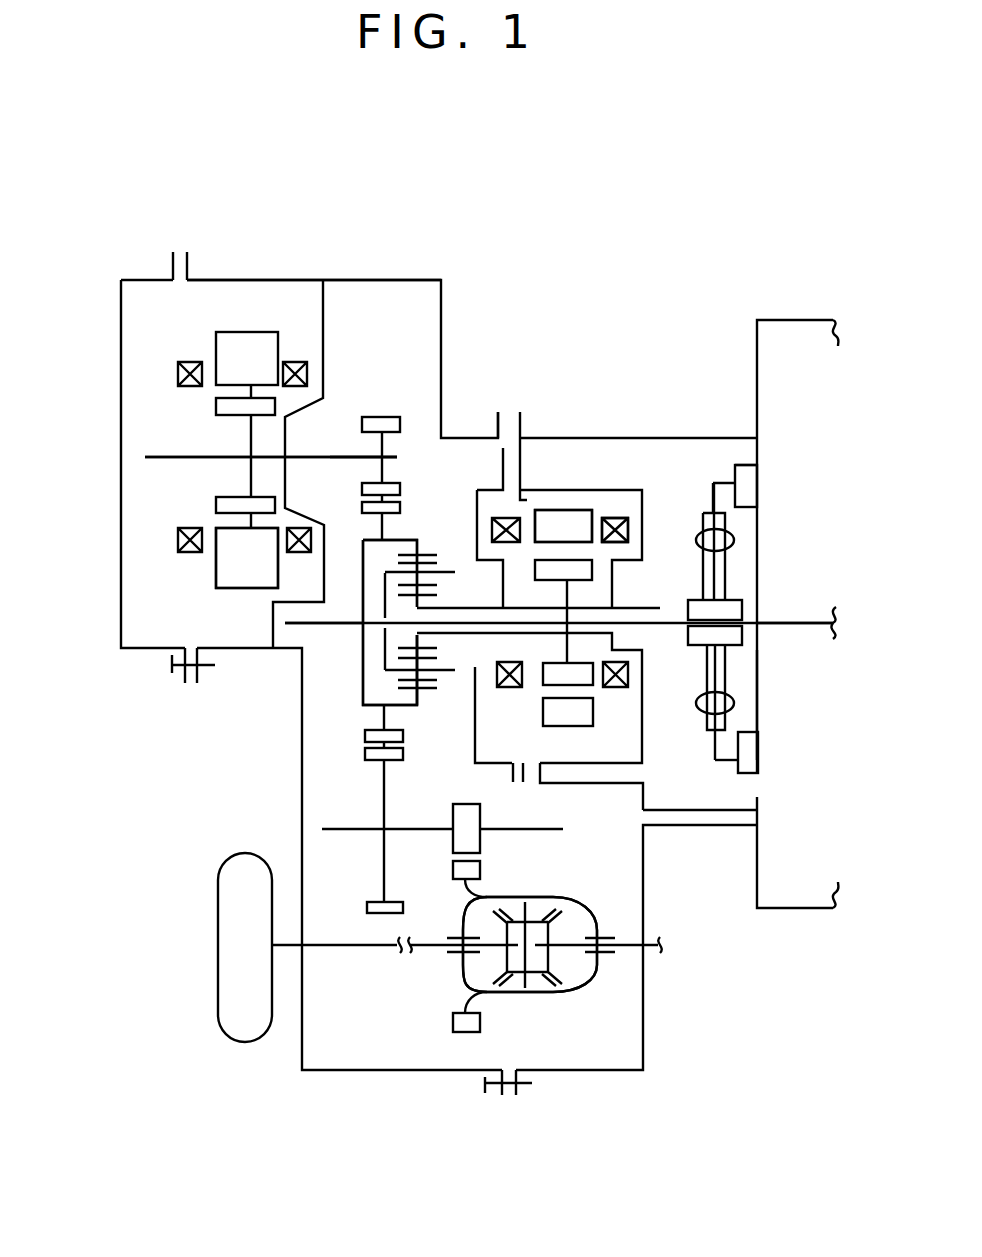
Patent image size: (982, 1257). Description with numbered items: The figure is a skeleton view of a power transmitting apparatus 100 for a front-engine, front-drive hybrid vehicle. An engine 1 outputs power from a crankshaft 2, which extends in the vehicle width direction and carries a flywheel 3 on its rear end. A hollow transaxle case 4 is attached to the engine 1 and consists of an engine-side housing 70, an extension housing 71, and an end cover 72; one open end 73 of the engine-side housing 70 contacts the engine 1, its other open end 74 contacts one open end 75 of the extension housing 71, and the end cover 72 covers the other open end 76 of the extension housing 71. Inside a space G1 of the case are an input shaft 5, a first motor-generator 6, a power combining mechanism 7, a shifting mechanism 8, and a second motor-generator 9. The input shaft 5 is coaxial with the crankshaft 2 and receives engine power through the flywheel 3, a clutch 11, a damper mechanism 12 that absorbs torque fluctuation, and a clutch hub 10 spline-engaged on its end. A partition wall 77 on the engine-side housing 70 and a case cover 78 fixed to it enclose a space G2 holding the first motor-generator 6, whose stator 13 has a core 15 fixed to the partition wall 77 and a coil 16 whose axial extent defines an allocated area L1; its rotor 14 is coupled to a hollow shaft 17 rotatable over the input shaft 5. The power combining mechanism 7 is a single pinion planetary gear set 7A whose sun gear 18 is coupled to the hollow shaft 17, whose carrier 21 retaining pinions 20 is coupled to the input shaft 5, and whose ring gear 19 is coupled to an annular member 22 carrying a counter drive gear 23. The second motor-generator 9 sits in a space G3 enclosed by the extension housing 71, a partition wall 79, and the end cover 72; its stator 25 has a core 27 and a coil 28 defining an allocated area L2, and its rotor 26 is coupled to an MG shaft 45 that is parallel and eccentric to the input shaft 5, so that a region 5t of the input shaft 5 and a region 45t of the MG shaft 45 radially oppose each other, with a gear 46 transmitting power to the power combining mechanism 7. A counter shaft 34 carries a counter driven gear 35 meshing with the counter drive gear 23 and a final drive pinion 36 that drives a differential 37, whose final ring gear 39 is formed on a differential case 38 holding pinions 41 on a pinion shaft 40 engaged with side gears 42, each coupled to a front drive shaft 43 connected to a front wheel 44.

The power transmitting apparatus 100 is at (542, 218).
The engine 1 is at (783, 315).
The crankshaft 2 is at (787, 622).
The flywheel 3 is at (758, 706).
The transaxle case 4 is at (574, 429).
The input shaft 5 is at (672, 622).
The region of the input shaft 5t is at (397, 630).
The first motor-generator 6 is at (525, 490).
The power combining mechanism 7 is at (421, 510).
The planetary gear set 7A is at (432, 545).
The shifting mechanism 8 is at (346, 490).
The second motor-generator 9 is at (195, 473).
The clutch hub 10 is at (690, 646).
The clutch 11 is at (732, 774).
The damper mechanism 12 is at (698, 720).
The stator 13 is at (617, 510).
The rotor 14 is at (533, 568).
The core 15 is at (571, 510).
The coil 16 is at (630, 530).
The hollow shaft 17 is at (500, 633).
The sun gear 18 is at (430, 598).
The ring gear 19 is at (405, 738).
The pinions 20 is at (432, 692).
The carrier 21 is at (442, 668).
The annular member 22 is at (366, 705).
The counter drive gear 23 is at (366, 754).
The stator 25 is at (211, 606).
The rotor 26 is at (226, 416).
The core 27 is at (216, 577).
The coil 28 is at (188, 360).
The counter shaft 34 is at (413, 832).
The counter driven gear 35 is at (366, 902).
The final drive pinion 36 is at (481, 810).
The differential 37 is at (452, 977).
The differential case 38 is at (547, 995).
The final ring gear 39 is at (481, 865).
The pinion shaft 40 is at (535, 908).
The pinions 41 is at (499, 912).
The side gears 42 is at (472, 911).
The front drive shafts 43 is at (356, 948).
The front wheel 44 is at (250, 852).
The MG shaft 45 is at (328, 457).
The region of the MG shaft 45t is at (354, 455).
The gear 46 is at (382, 417).
The engine-side housing 70 is at (644, 436).
The extension housing 71 is at (378, 280).
The end cover 72 is at (121, 410).
The open end 73 is at (760, 455).
The open end 74 is at (520, 412).
The open end 75 is at (500, 417).
The open end 76 is at (183, 252).
The partition wall 77 is at (616, 507).
The case cover 78 is at (497, 465).
The partition wall 79 is at (325, 305).
The space G1 is at (718, 469).
The space G2 is at (465, 800).
The space G3 is at (168, 365).
The allocated area L1 is at (487, 728).
The allocated area L2 is at (168, 325).